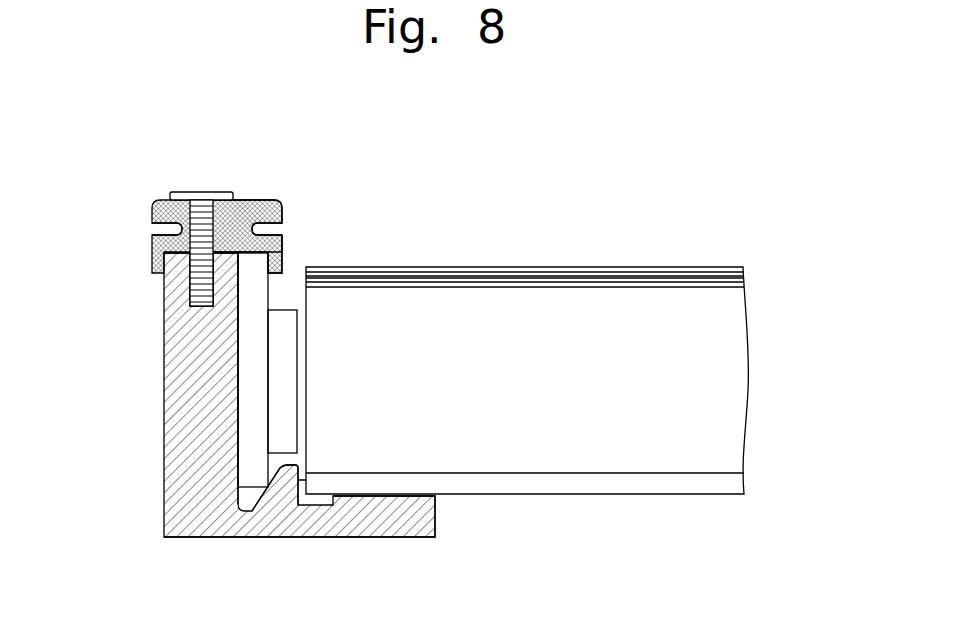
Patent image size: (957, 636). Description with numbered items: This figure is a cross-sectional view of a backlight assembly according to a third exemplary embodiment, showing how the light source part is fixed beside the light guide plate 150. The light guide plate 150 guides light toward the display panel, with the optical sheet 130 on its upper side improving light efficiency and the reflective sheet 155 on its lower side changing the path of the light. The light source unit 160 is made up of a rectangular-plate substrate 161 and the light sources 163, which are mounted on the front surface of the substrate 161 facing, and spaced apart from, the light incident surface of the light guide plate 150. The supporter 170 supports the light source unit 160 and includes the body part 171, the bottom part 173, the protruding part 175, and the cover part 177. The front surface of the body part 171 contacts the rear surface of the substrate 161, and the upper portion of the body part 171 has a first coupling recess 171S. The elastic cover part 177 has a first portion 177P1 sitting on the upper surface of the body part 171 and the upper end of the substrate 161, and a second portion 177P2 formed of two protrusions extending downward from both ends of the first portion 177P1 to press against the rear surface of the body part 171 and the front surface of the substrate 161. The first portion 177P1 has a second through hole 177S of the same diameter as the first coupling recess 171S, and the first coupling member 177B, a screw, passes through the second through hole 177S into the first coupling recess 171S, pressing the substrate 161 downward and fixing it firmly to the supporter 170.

The optical sheet 130 is at (756, 268).
The light guide plate 150 is at (735, 390).
The reflective sheet 155 is at (730, 483).
The light source unit 160 is at (166, 370).
The substrate 161 is at (250, 379).
The light sources 163 is at (277, 338).
The supporter 170 is at (254, 435).
The body part 171 is at (163, 418).
The first coupling recess 171S is at (186, 294).
The bottom part 173 is at (370, 517).
The protruding part 175 is at (298, 481).
The cover part 177 is at (239, 197).
The first coupling member 177B is at (198, 192).
The first portion 177P1 is at (247, 242).
The second portion 177P2 is at (283, 262).
The second through hole 177S is at (186, 217).